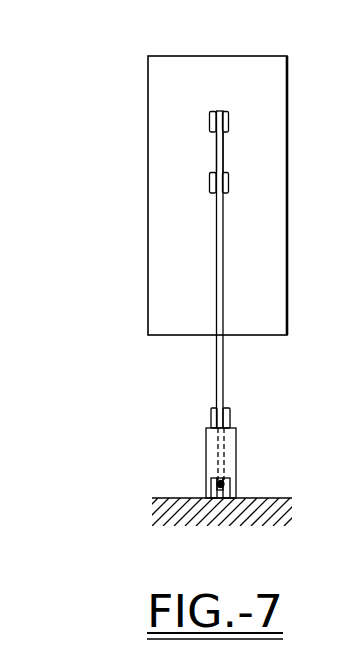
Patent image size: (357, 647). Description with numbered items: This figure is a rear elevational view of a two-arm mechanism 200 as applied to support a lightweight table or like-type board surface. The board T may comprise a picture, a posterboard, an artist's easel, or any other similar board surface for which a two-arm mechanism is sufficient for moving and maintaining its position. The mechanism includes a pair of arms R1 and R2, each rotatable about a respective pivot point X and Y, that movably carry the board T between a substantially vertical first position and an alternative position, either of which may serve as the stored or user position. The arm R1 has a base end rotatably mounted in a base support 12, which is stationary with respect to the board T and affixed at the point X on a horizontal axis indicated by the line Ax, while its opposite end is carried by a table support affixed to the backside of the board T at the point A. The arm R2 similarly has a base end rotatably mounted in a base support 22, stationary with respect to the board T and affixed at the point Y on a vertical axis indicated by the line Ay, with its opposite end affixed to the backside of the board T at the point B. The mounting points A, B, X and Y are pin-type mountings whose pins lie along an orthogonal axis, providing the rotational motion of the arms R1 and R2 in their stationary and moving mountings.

The two-arm mechanism 200 is at (198, 98).
The board T is at (223, 56).
The mounting point B is at (209, 118).
The arm R2 is at (216, 151).
The mounting point A is at (209, 183).
The base support 22 is at (211, 417).
The pivot point Y is at (230, 419).
The arm R1 is at (218, 447).
The pivot point X is at (224, 481).
The horizontal axis line Ax is at (225, 481).
The base support 12 is at (207, 482).
The vertical axis line Ay is at (223, 498).